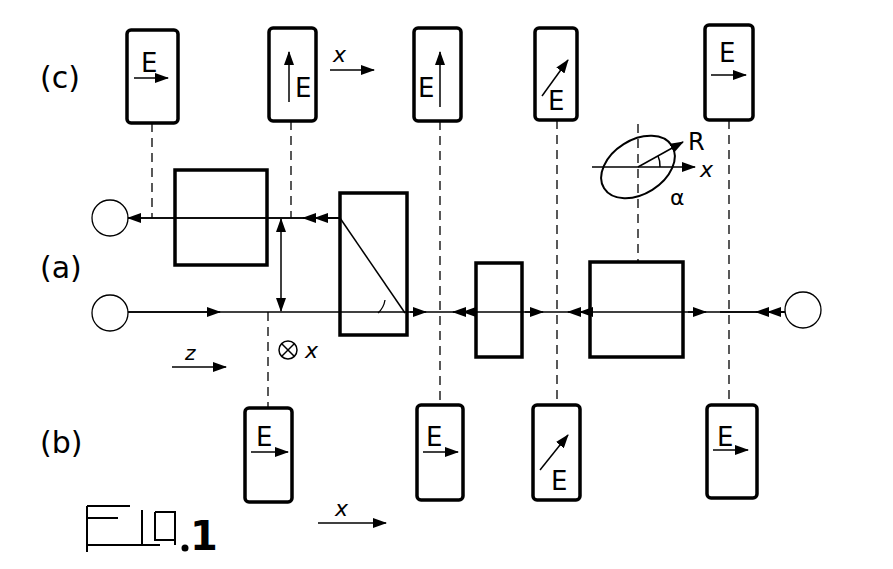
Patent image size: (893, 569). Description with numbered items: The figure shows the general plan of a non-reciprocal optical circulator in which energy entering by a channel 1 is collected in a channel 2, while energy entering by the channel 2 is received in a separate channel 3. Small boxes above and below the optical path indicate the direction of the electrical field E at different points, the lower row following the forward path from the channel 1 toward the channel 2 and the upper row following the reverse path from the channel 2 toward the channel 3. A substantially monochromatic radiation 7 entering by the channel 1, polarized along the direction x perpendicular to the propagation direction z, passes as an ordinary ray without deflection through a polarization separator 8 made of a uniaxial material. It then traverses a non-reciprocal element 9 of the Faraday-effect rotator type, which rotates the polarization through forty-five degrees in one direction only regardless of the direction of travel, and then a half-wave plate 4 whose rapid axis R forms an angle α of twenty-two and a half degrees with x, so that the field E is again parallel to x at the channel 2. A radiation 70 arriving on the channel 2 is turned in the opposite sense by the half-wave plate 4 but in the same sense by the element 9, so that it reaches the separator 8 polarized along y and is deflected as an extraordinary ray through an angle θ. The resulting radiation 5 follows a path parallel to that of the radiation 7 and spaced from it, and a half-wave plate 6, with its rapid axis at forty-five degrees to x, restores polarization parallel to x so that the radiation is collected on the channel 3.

The channel 1 is at (110, 313).
The channel 2 is at (803, 310).
The channel 3 is at (110, 218).
The half-wave plate 4 is at (640, 357).
The radiation 5 is at (322, 218).
The half-wave plate 6 is at (216, 170).
The radiation 7 is at (165, 315).
The polarization separator 8 is at (358, 335).
The non-reciprocal element 9 is at (497, 263).
The radiation 70 is at (740, 310).